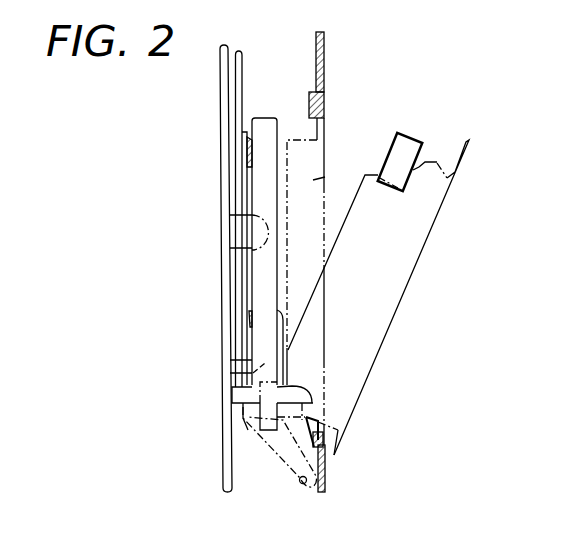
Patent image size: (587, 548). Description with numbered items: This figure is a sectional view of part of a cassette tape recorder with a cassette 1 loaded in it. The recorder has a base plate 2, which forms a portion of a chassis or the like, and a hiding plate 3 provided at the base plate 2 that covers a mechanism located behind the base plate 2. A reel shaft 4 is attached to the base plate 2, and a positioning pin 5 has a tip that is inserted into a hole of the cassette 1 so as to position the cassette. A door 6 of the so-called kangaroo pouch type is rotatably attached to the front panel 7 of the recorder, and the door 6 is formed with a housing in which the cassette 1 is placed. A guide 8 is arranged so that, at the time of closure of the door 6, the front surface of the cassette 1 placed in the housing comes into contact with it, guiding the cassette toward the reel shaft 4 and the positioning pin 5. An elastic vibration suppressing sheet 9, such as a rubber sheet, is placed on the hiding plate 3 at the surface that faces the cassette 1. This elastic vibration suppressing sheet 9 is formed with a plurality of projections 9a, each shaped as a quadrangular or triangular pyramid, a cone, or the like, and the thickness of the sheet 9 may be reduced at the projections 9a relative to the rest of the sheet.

The cassette 1 is at (262, 328).
The base plate 2 is at (221, 128).
The hiding plate 3 is at (243, 66).
The reel shaft 4 is at (250, 253).
The positioning pin 5 is at (247, 390).
The door 6 is at (360, 203).
The front panel 7 is at (326, 54).
The guide 8 is at (300, 392).
The elastic vibration suppressing sheet 9 is at (243, 189).
The projections 9a is at (253, 137).